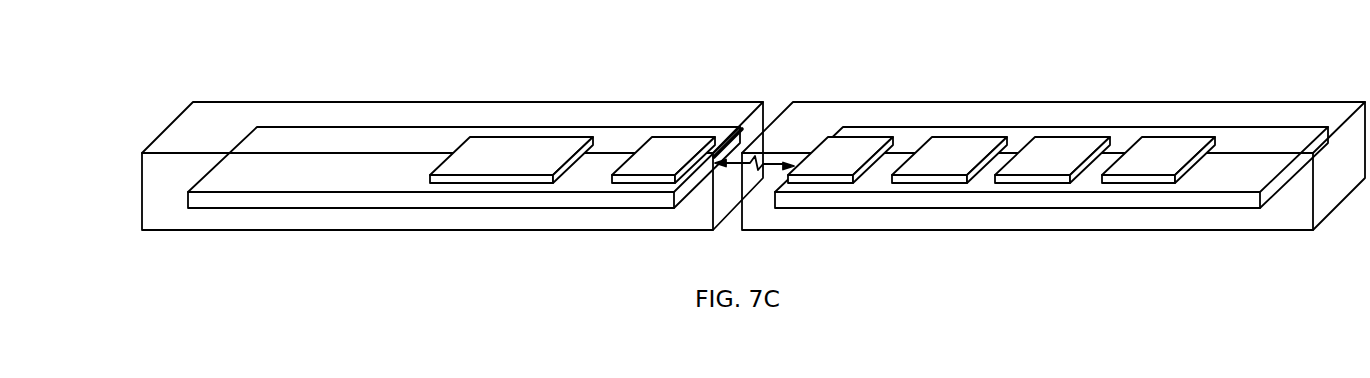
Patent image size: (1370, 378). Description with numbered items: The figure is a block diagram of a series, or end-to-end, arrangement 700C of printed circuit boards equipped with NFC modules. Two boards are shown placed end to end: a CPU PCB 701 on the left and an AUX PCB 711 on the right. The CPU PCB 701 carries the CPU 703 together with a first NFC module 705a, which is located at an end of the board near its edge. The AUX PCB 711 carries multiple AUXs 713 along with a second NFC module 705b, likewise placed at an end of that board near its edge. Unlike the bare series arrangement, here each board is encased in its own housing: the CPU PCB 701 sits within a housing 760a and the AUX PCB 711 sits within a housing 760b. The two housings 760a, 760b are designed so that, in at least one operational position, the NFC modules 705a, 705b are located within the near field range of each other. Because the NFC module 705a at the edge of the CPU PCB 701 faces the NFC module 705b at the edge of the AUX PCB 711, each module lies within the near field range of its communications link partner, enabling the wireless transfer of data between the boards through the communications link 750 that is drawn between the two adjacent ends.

The series arrangement 700C is at (300, 38).
The CPU PCB 701 is at (278, 137).
The CPU 703 is at (487, 148).
The NFC module 705a is at (675, 148).
The NFC module 705b is at (852, 148).
The AUX PCB 711 is at (1237, 142).
The AUXs 713 is at (1178, 142).
The communications link 750 is at (758, 155).
The housing 760a is at (543, 102).
The housing 760b is at (1137, 102).